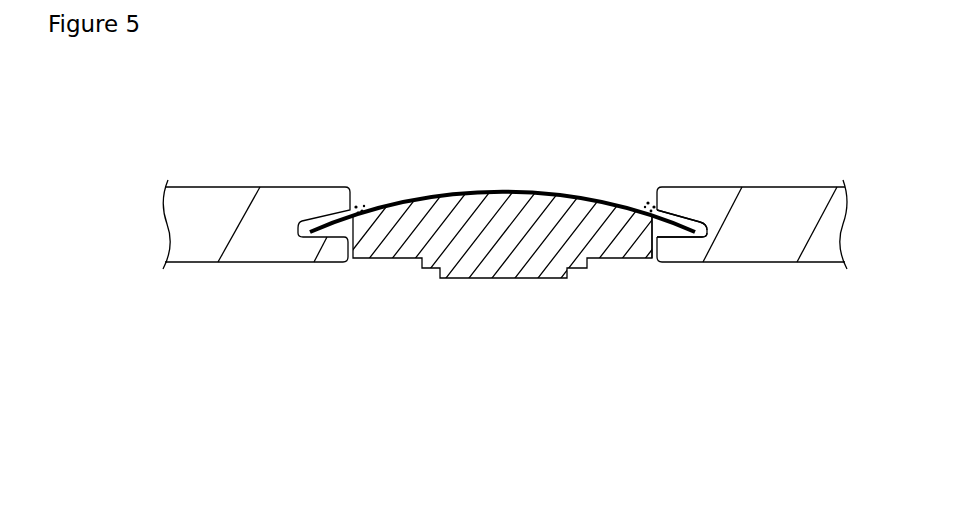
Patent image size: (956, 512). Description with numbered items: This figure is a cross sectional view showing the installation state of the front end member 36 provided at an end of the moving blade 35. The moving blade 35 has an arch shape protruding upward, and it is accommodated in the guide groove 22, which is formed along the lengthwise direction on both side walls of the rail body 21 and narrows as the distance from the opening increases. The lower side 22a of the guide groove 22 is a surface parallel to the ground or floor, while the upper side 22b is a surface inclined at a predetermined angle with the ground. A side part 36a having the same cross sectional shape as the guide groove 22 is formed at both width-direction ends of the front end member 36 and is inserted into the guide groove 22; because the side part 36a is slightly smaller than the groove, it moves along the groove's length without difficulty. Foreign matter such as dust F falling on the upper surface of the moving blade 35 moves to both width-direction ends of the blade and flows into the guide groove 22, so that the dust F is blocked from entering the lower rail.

The frame 21 is at (782, 213).
The guide groove 22 is at (745, 432).
The lower side of the guide groove 22a is at (687, 238).
The upper side of the guide groove 22b is at (698, 238).
The moving blade 35 is at (494, 191).
The front end member 36 is at (472, 242).
The side part 36a is at (675, 238).
The dust F is at (651, 205).